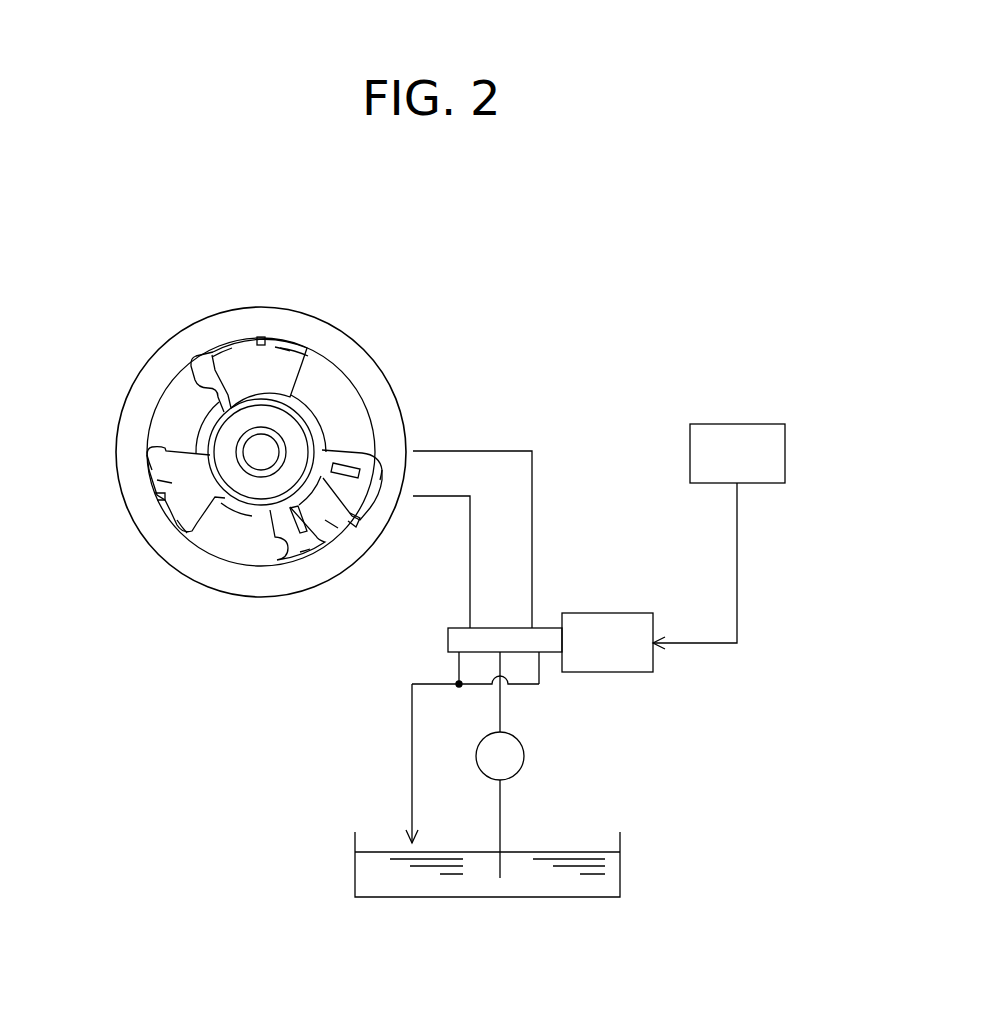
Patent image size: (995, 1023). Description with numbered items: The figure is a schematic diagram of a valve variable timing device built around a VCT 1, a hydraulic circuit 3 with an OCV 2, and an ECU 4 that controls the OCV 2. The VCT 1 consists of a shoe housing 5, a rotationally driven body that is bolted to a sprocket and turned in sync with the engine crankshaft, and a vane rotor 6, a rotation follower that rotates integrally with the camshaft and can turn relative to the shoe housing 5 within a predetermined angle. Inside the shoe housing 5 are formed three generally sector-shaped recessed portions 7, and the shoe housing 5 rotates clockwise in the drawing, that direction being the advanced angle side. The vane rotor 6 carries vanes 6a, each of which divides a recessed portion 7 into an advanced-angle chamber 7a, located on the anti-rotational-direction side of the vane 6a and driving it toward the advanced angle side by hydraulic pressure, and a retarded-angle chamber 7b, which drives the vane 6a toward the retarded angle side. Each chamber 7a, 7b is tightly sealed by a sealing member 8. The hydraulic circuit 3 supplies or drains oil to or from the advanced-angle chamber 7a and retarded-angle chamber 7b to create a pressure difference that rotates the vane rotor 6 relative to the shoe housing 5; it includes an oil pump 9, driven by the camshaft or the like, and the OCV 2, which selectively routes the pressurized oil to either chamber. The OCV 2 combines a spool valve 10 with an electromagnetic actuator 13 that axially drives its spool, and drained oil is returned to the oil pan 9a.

The VCT 1 is at (145, 348).
The OCV 2 is at (555, 595).
The hydraulic circuit 3 is at (395, 718).
The ECU 4 is at (749, 424).
The shoe housing 5 is at (343, 353).
The vane rotor 6 is at (320, 427).
The vane 6a is at (283, 352).
The recessed portion 7 is at (203, 383).
The advanced-angle chamber 7a is at (208, 368).
The retarded-angle chamber 7b is at (320, 355).
The sealing member 8 is at (258, 337).
The oil pump 9 is at (524, 752).
The oil pan 9a is at (621, 856).
The spool valve 10 is at (460, 623).
The electromagnetic actuator 13 is at (615, 678).